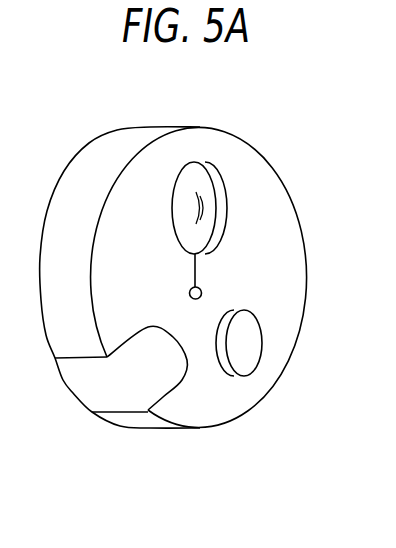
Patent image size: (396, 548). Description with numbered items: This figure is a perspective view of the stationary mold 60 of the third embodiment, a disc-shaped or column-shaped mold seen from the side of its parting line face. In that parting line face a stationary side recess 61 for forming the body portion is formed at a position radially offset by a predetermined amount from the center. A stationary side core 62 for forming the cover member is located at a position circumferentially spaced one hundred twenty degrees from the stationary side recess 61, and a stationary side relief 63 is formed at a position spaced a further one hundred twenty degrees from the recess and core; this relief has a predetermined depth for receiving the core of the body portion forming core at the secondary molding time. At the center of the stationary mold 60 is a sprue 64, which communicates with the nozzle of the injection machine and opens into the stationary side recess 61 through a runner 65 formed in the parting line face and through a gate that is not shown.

The stationary mold 60 is at (235, 132).
The stationary side recess 61 is at (227, 197).
The stationary side core 62 is at (263, 353).
The stationary side relief 63 is at (148, 380).
The sprue 64 is at (188, 293).
The runner 65 is at (197, 267).